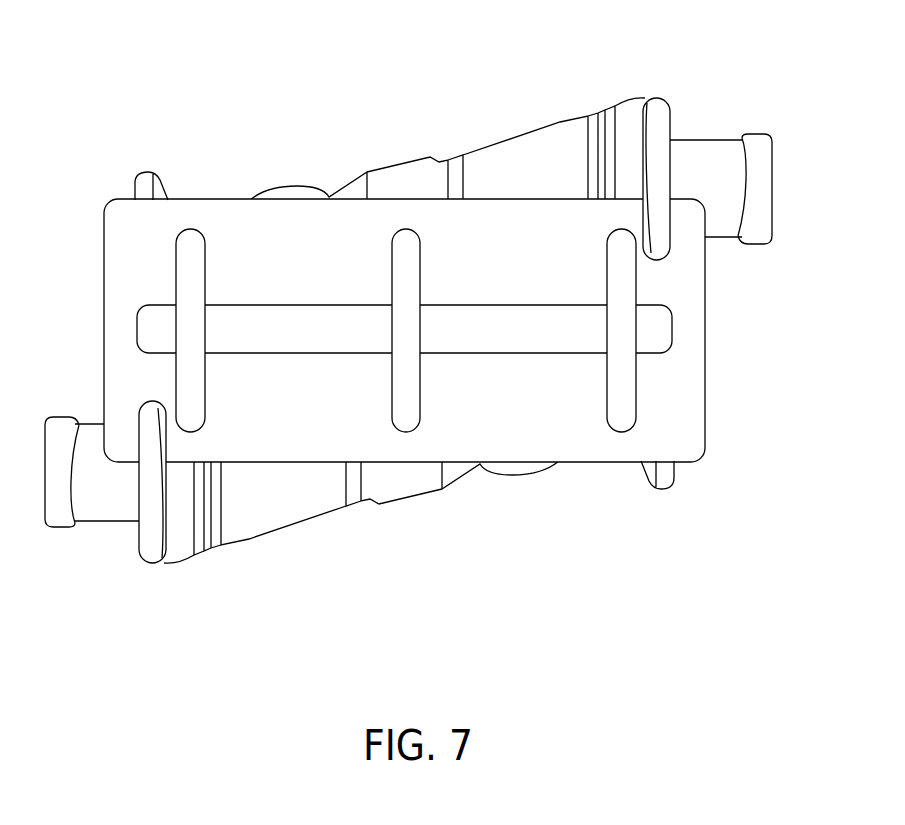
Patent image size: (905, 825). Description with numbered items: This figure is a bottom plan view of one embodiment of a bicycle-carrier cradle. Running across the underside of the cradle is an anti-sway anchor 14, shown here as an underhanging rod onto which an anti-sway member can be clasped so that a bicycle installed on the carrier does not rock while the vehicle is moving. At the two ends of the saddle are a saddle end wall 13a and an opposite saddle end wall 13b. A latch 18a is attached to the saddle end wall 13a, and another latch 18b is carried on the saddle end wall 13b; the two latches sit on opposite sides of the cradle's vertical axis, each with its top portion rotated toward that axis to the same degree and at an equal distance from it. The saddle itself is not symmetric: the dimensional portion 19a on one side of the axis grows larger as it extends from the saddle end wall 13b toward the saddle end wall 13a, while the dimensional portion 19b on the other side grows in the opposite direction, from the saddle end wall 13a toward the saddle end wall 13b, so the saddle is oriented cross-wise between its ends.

The anti-sway anchor 14 is at (589, 331).
The saddle end wall 13a is at (170, 565).
The saddle end wall 13b is at (645, 97).
The latch 18a is at (62, 527).
The latch 18b is at (745, 137).
The dimensional portion 19a is at (278, 528).
The dimensional portion 19b is at (533, 131).